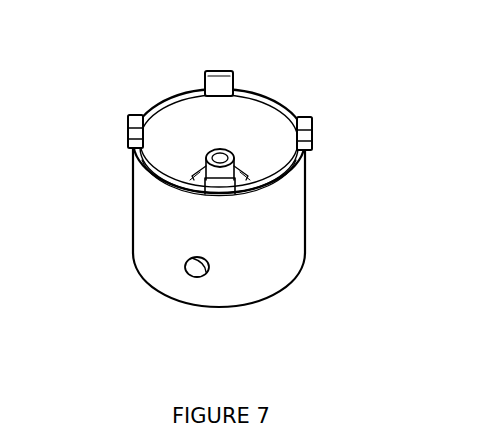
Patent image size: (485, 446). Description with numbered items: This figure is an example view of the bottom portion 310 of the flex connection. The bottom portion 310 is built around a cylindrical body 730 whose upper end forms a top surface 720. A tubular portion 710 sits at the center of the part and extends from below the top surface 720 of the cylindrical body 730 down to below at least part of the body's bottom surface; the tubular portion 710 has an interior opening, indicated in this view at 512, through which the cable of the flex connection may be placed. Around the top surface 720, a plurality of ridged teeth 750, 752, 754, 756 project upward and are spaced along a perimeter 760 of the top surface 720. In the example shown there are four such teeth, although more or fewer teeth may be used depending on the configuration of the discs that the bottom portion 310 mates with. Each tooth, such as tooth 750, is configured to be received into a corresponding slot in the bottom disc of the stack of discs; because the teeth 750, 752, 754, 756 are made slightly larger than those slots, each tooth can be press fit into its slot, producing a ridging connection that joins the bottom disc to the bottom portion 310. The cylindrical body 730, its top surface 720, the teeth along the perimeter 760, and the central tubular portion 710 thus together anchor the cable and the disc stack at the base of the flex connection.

The bottom portion 310 is at (104, 64).
The opening 512 is at (231, 160).
The tubular portion 710 is at (222, 152).
The top surface 720 is at (148, 104).
The cylindrical body 730 is at (131, 250).
The ridged tooth 750 is at (128, 122).
The ridged tooth 752 is at (216, 72).
The ridged tooth 754 is at (313, 119).
The ridged tooth 756 is at (128, 213).
The perimeter 760 is at (311, 155).